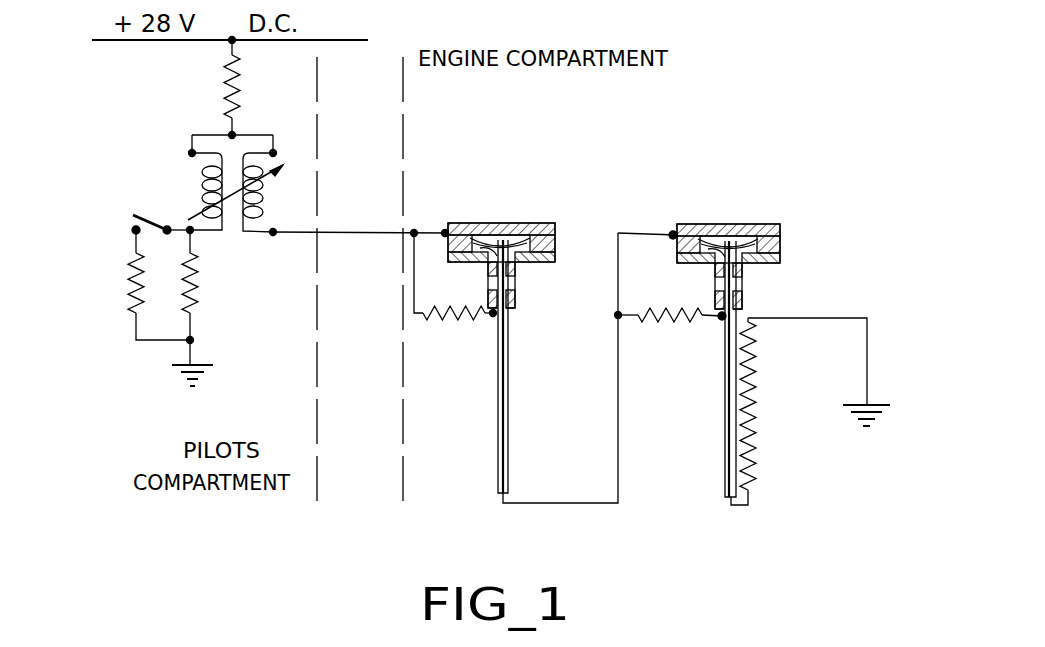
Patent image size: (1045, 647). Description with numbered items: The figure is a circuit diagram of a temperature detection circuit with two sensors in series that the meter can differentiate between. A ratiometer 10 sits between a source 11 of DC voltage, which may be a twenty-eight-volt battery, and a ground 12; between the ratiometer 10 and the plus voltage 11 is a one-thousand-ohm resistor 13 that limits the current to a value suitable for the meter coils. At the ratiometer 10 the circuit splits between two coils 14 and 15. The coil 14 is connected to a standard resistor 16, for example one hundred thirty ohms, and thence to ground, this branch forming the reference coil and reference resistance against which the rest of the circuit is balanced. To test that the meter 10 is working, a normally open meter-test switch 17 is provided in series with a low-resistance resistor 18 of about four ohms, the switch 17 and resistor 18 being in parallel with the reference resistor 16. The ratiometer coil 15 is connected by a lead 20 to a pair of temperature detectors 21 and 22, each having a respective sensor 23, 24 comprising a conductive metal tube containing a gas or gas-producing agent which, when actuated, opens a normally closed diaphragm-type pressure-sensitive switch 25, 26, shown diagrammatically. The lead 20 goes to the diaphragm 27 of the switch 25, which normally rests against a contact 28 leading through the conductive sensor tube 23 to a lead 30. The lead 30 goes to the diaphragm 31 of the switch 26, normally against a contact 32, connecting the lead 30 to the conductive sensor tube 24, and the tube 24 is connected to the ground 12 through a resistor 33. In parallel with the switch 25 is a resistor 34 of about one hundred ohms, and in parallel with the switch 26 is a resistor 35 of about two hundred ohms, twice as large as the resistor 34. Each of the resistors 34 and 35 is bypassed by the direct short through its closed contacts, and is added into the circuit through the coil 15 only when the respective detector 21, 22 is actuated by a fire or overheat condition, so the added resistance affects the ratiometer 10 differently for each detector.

The ratiometer 10 is at (180, 185).
The source of DC voltage 11 is at (128, 41).
The ground 12 is at (170, 371).
The resistor 13 is at (227, 92).
The coil 14 is at (205, 197).
The coil 15 is at (260, 196).
The standard resistor 16 is at (196, 285).
The meter-test switch 17 is at (140, 216).
The low-resistance resistor 18 is at (128, 283).
The lead 20 is at (344, 231).
The temperature detector 21 is at (498, 244).
The temperature detector 22 is at (703, 244).
The sensor 23 is at (498, 414).
The sensor 24 is at (725, 420).
The pressure-sensitive switch 25 is at (490, 258).
The pressure-sensitive switch 26 is at (713, 262).
The diaphragm 27 is at (506, 240).
The contact 28 is at (512, 264).
The lead 30 is at (574, 505).
The diaphragm 31 is at (736, 246).
The contact 32 is at (742, 265).
The resistor 33 is at (751, 440).
The resistor 34 is at (465, 319).
The resistor 35 is at (683, 321).